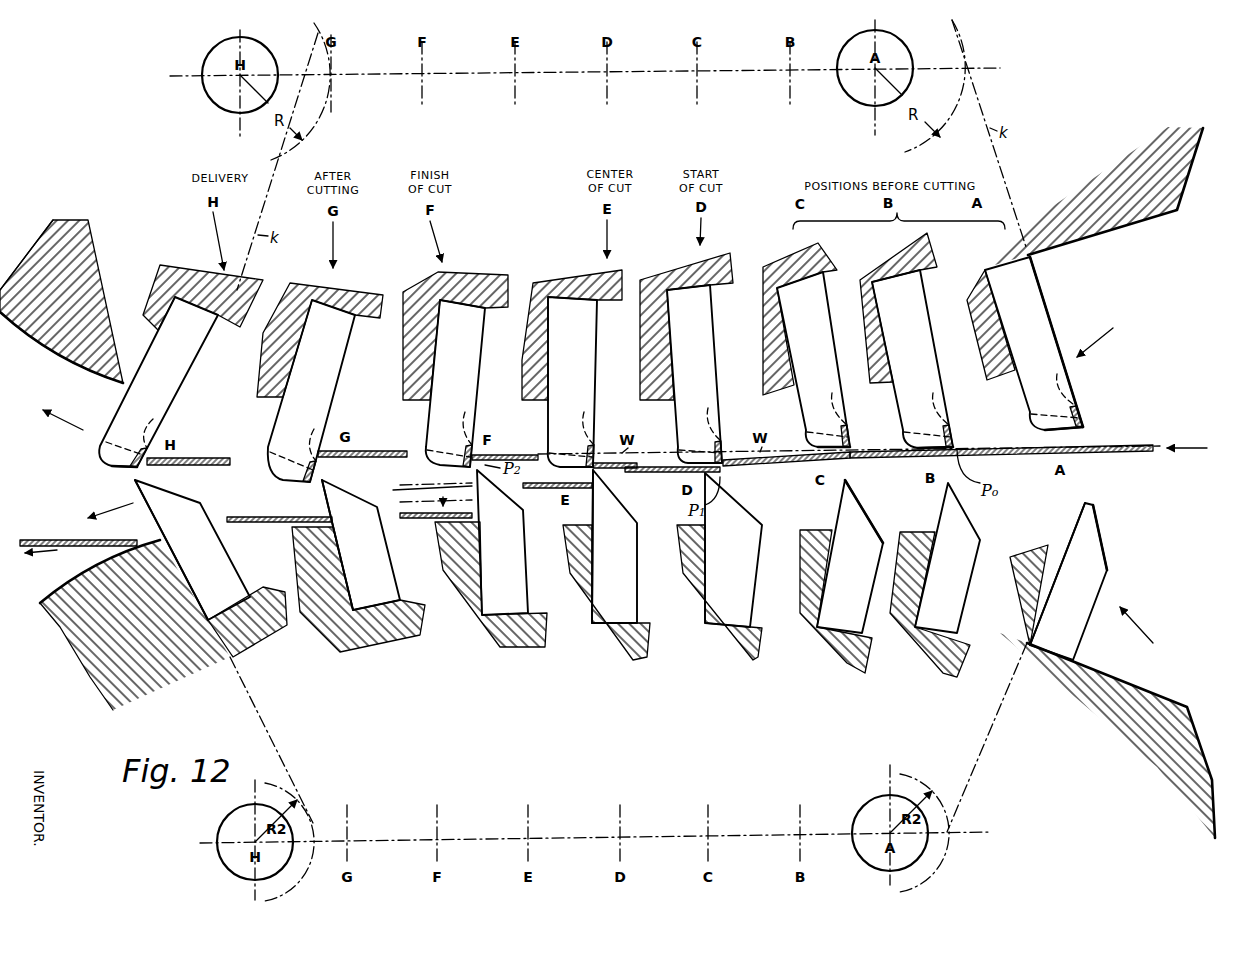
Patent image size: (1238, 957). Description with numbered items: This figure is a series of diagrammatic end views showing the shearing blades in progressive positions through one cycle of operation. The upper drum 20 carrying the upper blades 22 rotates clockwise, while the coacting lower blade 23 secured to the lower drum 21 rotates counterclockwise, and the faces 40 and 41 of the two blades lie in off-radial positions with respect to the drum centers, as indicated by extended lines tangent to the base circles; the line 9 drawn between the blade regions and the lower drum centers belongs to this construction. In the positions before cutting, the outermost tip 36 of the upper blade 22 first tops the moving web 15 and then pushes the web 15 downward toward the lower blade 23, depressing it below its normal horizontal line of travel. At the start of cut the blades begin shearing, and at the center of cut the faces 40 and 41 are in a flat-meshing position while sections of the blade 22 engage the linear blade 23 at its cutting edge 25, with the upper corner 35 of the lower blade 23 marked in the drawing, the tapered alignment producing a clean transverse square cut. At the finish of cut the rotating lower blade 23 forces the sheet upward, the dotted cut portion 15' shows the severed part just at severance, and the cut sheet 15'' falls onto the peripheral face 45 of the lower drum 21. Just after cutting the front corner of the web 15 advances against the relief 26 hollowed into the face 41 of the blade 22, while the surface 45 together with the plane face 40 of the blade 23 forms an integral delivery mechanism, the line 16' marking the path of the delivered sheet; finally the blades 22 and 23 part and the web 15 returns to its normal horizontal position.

The pitch line 9 is at (268, 728).
The web 15 is at (650, 456).
The cut portion of the sheet 15' is at (621, 493).
The cut sheet 15'' is at (246, 515).
The strip path line 16' is at (432, 476).
The upper drum 20 is at (55, 333).
The lower drum 21 is at (263, 592).
The upper blade 22 is at (180, 380).
The lower blade 23 is at (193, 520).
The cutting edge 25 is at (140, 470).
The relief 26 is at (155, 443).
The cutting edge of lower blade 35 is at (848, 482).
The outermost tip 36 is at (848, 446).
The face of blade 23 40 is at (137, 492).
The face of blade 22 41 is at (200, 356).
The peripheral face of lower drum 45 is at (100, 558).